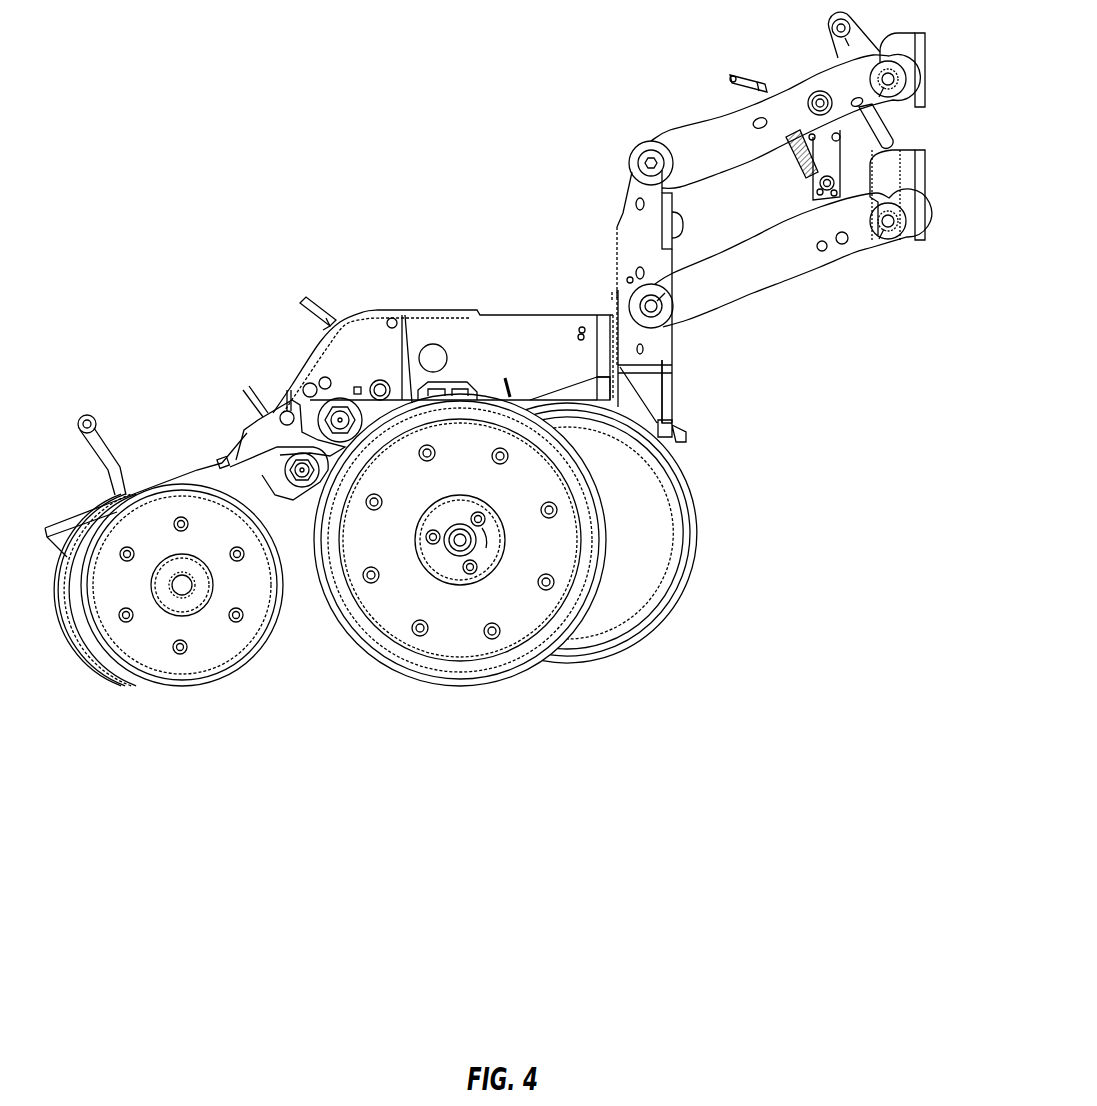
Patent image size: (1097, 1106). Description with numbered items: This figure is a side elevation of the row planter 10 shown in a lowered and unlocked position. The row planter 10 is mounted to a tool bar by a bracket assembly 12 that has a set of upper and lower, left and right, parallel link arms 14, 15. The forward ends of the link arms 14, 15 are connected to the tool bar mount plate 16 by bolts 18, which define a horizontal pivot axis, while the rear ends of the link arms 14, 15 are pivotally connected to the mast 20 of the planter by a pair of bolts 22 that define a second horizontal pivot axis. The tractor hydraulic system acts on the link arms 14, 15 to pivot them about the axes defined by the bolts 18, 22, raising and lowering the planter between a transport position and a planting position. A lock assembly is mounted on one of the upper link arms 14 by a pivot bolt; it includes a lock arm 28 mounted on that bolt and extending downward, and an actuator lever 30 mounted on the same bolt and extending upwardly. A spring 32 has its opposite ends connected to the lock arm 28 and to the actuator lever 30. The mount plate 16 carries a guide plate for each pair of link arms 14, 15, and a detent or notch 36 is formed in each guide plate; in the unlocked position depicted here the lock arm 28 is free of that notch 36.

The row planter 10 is at (320, 285).
The bracket assembly 12 is at (762, 326).
The upper link arm 14 is at (713, 128).
The lower link arm 15 is at (758, 250).
The tool bar mount plate 16 is at (897, 125).
The bolts 18 is at (878, 80).
The mast 20 is at (628, 222).
The bolts 22 is at (650, 158).
The lock arm 28 is at (818, 201).
The actuator lever 30 is at (731, 74).
The spring 32 is at (807, 163).
The notch 36 is at (888, 153).